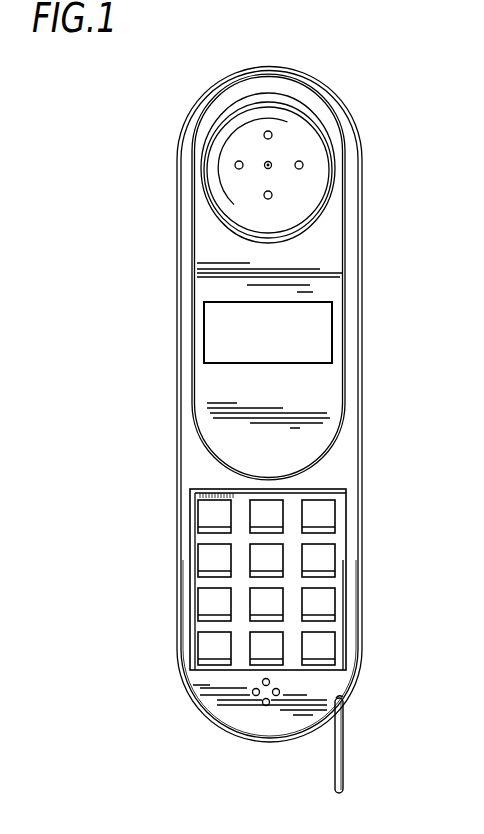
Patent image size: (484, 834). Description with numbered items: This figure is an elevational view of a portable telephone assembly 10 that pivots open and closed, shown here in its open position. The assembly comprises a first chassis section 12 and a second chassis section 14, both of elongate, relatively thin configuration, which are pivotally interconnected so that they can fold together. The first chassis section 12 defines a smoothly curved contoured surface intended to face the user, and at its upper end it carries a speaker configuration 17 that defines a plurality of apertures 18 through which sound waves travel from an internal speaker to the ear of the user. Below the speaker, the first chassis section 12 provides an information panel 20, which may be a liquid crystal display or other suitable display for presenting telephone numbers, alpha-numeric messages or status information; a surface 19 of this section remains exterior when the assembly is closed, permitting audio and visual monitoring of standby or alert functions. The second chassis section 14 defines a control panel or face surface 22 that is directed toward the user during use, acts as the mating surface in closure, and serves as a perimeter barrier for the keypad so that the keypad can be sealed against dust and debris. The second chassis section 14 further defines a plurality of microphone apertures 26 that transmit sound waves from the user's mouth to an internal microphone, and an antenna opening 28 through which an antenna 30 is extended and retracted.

The portable telephone assembly 10 is at (156, 378).
The first chassis section 12 is at (363, 208).
The second chassis section 14 is at (362, 473).
The speaker configuration 17 is at (315, 136).
The apertures 18 is at (236, 165).
The surface 19 is at (200, 237).
The information panel 20 is at (323, 317).
The control panel or face surface 22 is at (190, 472).
The microphone apertures 26 is at (266, 703).
The antenna opening 28 is at (344, 703).
The antenna 30 is at (345, 770).